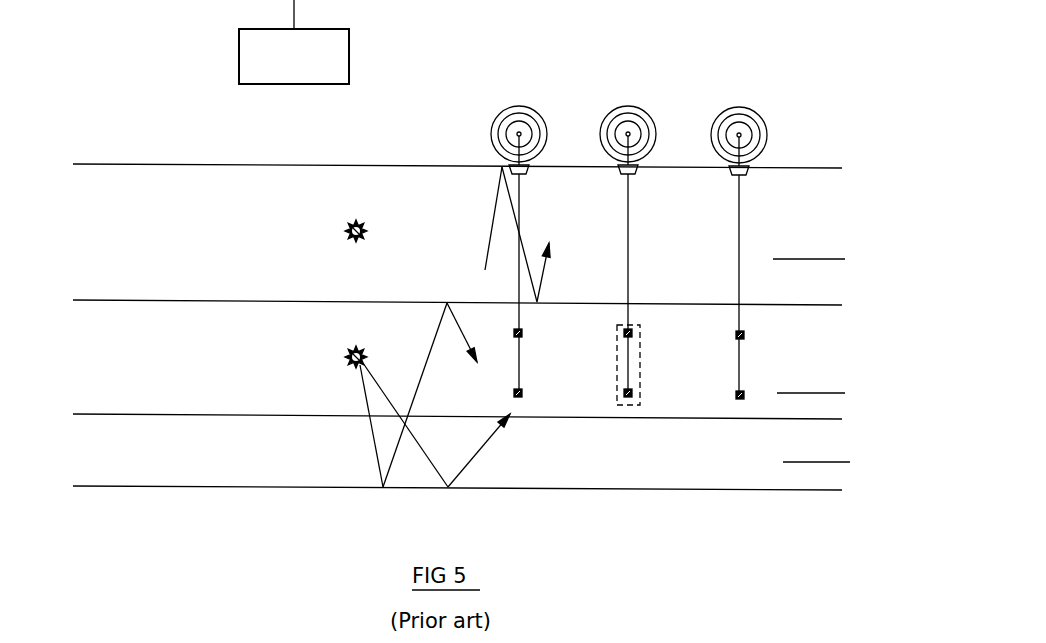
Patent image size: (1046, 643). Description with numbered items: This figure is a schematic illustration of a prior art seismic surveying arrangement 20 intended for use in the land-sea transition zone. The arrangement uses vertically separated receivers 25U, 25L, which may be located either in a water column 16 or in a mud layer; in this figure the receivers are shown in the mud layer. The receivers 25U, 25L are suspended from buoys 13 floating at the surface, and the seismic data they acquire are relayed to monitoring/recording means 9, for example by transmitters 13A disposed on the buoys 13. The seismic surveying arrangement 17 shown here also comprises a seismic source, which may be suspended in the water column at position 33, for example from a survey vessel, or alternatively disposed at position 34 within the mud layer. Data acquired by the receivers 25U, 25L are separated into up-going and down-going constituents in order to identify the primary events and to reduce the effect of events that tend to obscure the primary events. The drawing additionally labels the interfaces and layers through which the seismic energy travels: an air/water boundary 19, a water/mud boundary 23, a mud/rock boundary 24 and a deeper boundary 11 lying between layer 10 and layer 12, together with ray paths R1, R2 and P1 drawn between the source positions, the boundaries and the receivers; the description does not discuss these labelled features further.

The monitoring/recording means 9 is at (294, 42).
The air/water boundary 19 is at (95, 164).
The transmitters 13A is at (518, 133).
The buoys 13 is at (507, 164).
The seismic surveying arrangement 20 is at (782, 62).
The water/mud boundary 23 is at (168, 300).
The mud/rock boundary 24 is at (168, 414).
The boundary 11 is at (172, 487).
The source position 33 is at (373, 221).
The source position 34 is at (346, 401).
The reflected ray R2 is at (540, 270).
The reflected ray R1 is at (457, 327).
The primary ray P1 is at (483, 439).
The upper receiver 25U is at (629, 333).
The lower receiver 25L is at (629, 395).
The water column 16 is at (829, 209).
The seismic surveying arrangement 17 is at (826, 350).
The layer 10 (rock) 10 is at (550, 466).
The layer 12 is at (555, 538).